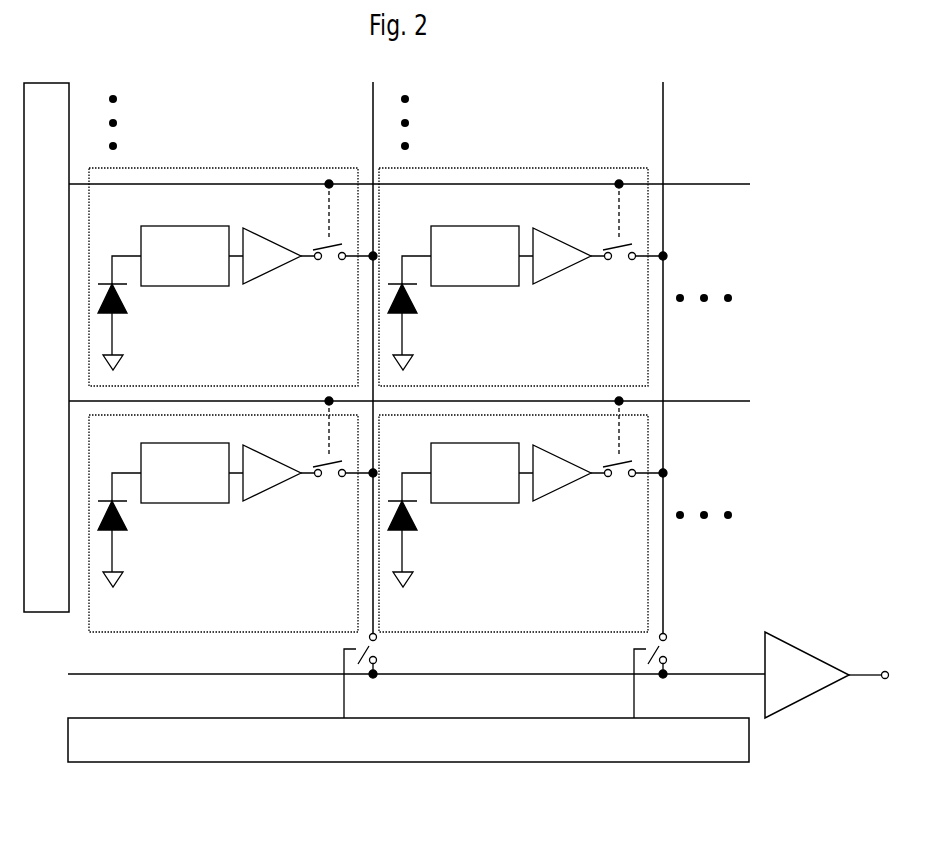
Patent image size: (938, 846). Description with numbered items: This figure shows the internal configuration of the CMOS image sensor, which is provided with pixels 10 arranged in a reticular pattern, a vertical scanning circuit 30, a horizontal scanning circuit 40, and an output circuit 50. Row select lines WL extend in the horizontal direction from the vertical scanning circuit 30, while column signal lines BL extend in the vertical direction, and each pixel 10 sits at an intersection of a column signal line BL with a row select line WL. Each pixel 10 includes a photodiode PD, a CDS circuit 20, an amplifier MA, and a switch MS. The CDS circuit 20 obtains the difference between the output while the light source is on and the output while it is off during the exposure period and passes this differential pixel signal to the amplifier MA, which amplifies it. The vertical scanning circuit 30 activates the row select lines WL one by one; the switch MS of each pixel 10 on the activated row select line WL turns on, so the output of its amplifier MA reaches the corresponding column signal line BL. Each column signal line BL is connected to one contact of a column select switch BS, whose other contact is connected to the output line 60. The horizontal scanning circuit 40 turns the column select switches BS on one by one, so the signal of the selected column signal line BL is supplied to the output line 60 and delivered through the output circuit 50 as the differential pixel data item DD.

The pixel 10 is at (532, 645).
The CDS circuit 20 is at (183, 287).
The vertical scanning circuit 30 is at (53, 82).
The horizontal scanning circuit 40 is at (634, 762).
The output circuit 50 is at (792, 705).
The output line 60 is at (705, 673).
The column signal line BL is at (662, 125).
The row select line WL is at (692, 401).
The amplifier MA is at (258, 278).
The switch MS is at (328, 260).
The photodiode PD is at (123, 299).
The column select switch BS is at (524, 652).
The differential pixel data item DD is at (869, 667).